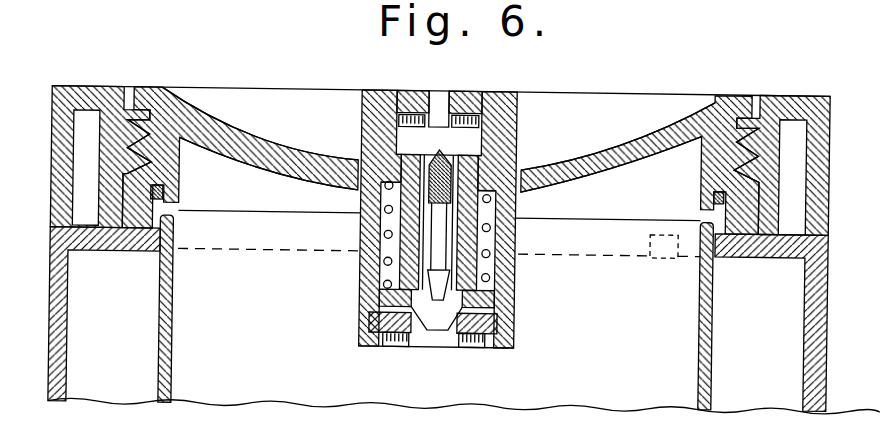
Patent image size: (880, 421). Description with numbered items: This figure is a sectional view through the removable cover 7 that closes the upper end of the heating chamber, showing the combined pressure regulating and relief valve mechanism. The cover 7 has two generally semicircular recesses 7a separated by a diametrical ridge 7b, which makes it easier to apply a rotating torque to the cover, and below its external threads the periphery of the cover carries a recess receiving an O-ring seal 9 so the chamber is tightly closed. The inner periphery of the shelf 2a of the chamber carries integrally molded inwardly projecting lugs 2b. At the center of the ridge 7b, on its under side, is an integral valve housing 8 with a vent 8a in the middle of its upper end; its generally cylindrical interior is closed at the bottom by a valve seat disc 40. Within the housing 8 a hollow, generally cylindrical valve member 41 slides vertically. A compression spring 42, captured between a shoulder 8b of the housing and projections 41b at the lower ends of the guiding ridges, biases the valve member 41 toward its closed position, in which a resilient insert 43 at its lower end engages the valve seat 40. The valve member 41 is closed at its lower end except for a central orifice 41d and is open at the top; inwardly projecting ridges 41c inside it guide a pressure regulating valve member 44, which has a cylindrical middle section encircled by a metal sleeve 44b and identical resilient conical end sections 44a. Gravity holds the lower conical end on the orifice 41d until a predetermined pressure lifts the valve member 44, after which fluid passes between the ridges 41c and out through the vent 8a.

The shelf 2a is at (80, 224).
The lugs 2b is at (157, 258).
The removable cover 7 is at (171, 121).
The semicircular recesses 7a is at (200, 124).
The diametrical ridge 7b is at (382, 103).
The valve housing 8 is at (506, 300).
The vent 8a is at (437, 96).
The shoulder 8b is at (520, 199).
The O-ring seal 9 is at (165, 198).
The valve seat disc 40 is at (478, 330).
The valve member 41 is at (407, 255).
The projections 41b is at (490, 301).
The inwardly projecting ridges 41c is at (420, 229).
The orifice 41d is at (432, 335).
The compression spring 42 is at (410, 288).
The resilient insert 43 is at (422, 336).
The pressure regulating valve member 44 is at (583, 60).
The conical end sections 44a is at (440, 158).
The sleeve 44b is at (445, 170).